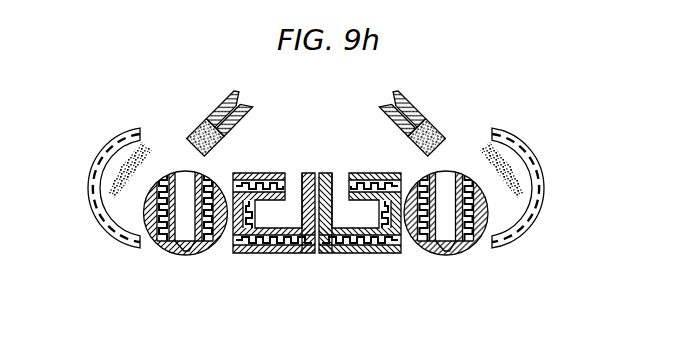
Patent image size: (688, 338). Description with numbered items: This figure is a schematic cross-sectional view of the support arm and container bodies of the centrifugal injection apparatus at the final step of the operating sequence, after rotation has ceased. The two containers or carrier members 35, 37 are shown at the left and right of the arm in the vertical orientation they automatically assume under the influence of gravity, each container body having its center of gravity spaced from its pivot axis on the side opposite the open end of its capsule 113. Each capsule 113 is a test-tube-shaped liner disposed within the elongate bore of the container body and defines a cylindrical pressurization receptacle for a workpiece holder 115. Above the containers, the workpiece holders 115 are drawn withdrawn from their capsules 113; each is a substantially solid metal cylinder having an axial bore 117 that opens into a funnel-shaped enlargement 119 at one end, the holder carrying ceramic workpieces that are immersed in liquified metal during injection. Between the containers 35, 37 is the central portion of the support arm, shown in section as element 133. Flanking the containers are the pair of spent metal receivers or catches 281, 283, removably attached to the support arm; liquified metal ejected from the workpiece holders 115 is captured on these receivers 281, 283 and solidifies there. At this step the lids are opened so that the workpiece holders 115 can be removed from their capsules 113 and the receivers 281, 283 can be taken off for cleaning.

The container 35 is at (196, 259).
The container 37 is at (447, 259).
The capsule 113 is at (209, 173).
The workpiece holder 115 is at (207, 104).
The axial bore 117 is at (236, 120).
The funnel-shaped enlargement 119 is at (251, 96).
The central bracket assembly 133 is at (336, 186).
The spent metal receiver 281 is at (108, 236).
The spent metal receiver 283 is at (522, 245).